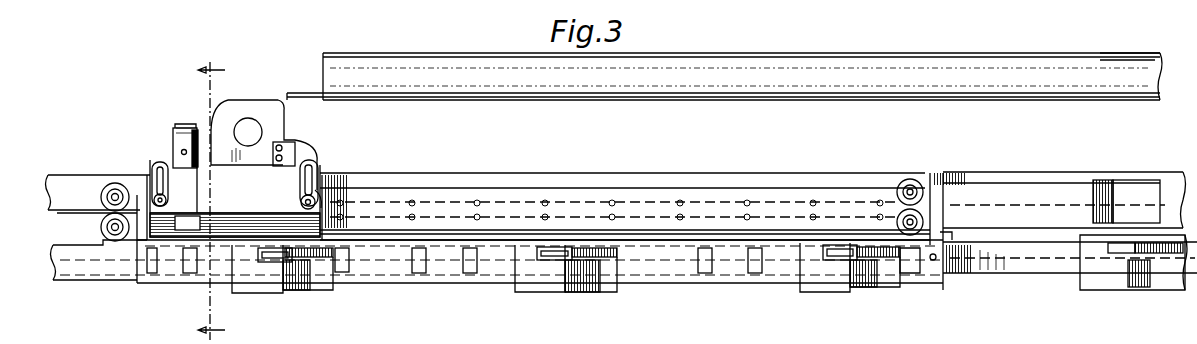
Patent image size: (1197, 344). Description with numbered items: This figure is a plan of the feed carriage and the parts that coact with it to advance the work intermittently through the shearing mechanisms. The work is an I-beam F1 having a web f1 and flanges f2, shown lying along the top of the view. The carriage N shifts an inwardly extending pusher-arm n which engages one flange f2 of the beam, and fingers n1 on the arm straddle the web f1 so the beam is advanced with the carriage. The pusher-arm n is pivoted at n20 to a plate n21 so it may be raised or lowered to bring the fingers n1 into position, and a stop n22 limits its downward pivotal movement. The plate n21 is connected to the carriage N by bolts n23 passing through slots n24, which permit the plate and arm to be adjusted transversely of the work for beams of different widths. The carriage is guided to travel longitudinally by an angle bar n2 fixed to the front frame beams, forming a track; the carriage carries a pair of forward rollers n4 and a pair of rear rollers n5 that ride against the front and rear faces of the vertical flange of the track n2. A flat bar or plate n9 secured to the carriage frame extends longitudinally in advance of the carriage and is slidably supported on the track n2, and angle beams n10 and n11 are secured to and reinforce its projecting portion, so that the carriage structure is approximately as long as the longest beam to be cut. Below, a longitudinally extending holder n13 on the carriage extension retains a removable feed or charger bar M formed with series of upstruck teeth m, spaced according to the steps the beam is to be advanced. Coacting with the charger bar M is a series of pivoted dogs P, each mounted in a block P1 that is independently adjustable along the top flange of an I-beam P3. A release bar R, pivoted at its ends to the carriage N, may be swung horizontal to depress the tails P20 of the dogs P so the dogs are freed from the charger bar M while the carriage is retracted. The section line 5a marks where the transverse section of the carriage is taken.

The section line 5a is at (211, 194).
The beam F' F1 is at (903, 52).
The flange f2 is at (1113, 52).
The web f1 is at (1127, 72).
The fingers n1 is at (313, 90).
The pusher-arm n is at (275, 103).
The pivot n20 is at (200, 148).
The plate n21 is at (182, 128).
The stop n22 is at (295, 98).
The carriage N is at (242, 195).
The slots n24 is at (165, 165).
The bolts n23 is at (318, 210).
The rear rollers n5 is at (115, 195).
The angle bar n2 is at (72, 178).
The angle beam n11 is at (1102, 185).
The angle beam n10 is at (1135, 185).
The flat bar or plate n9 is at (845, 173).
The forward rollers n4 is at (918, 172).
The release bar R is at (370, 240).
The feed or charger bar M is at (500, 285).
The upstruck teeth m is at (470, 265).
The holder n13 is at (715, 280).
The block P1 is at (272, 295).
The dogs P is at (312, 292).
The tails P20 is at (262, 252).
The I-beam P3 is at (1050, 272).